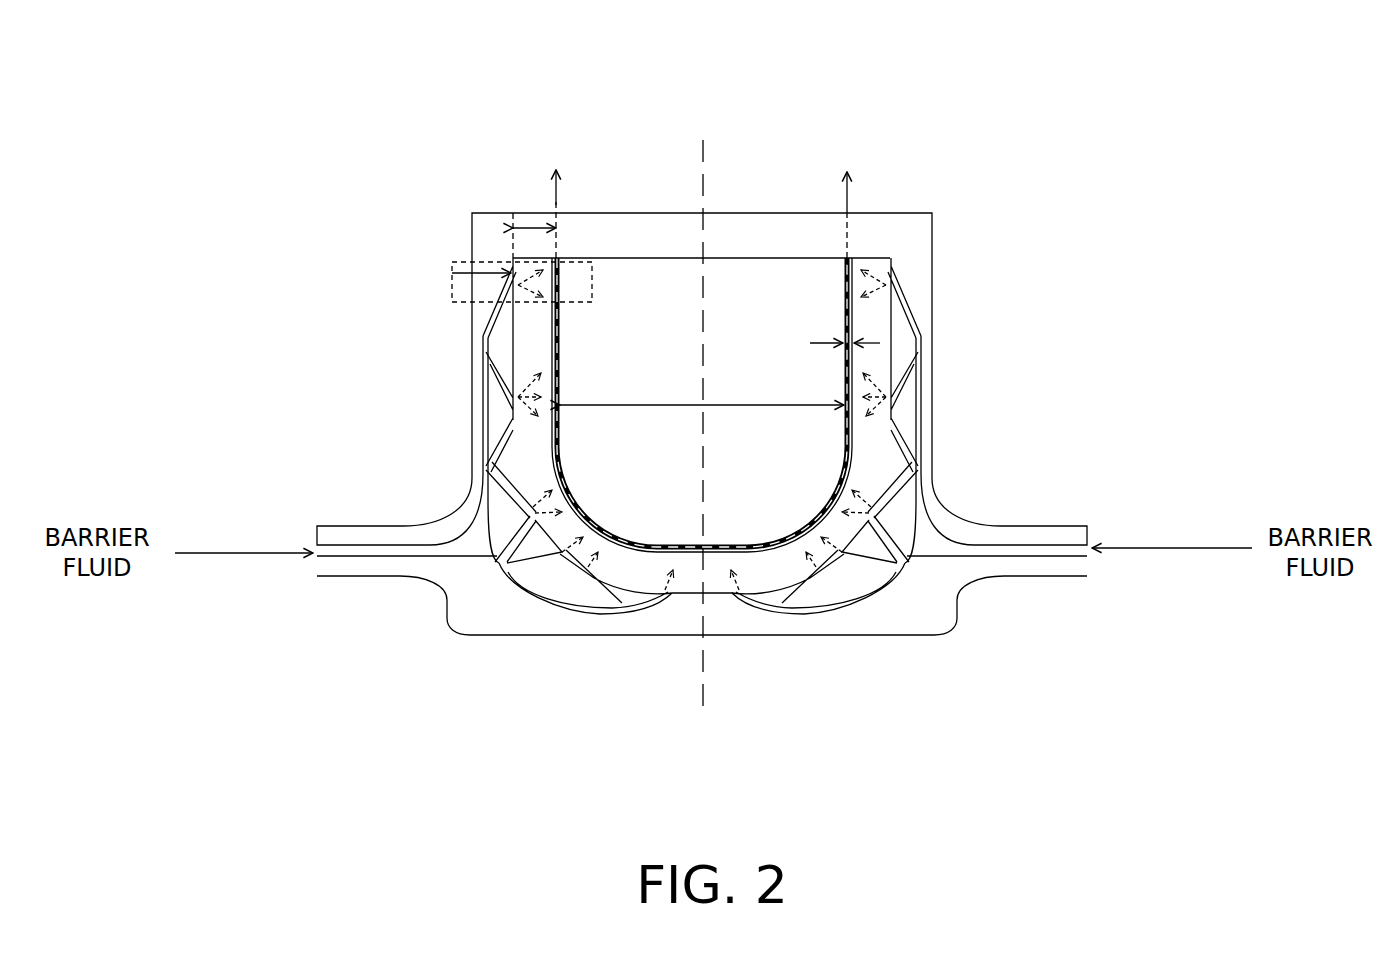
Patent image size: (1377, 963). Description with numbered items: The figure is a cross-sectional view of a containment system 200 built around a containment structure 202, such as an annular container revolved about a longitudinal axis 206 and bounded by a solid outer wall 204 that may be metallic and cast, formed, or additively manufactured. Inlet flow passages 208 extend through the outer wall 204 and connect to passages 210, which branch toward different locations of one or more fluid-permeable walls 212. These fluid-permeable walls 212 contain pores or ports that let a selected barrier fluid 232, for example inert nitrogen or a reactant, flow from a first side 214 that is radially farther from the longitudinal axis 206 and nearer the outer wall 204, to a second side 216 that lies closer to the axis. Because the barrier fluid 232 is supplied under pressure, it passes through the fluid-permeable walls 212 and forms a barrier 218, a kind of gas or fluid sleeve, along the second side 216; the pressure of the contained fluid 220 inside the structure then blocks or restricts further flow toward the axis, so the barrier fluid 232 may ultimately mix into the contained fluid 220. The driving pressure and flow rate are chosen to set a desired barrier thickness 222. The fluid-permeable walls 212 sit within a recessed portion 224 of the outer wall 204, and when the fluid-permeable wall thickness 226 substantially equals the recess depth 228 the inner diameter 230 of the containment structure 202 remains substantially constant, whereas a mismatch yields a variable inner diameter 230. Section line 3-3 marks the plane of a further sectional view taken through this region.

The containment system 200 is at (1060, 56).
The containment structure 202 is at (506, 226).
The outer wall 204 is at (932, 242).
The longitudinal axis 206 is at (703, 158).
The inlet flow passages 208 is at (297, 562).
The passages 210 is at (480, 391).
The fluid-permeable walls 212 is at (715, 587).
The first side 214 is at (916, 400).
The second side 216 is at (560, 352).
The barrier 218 is at (761, 543).
The contained fluid 220 is at (702, 388).
The barrier thickness 222 is at (810, 343).
The recessed portion 224 is at (511, 247).
The fluid-permeable wall thickness 226 is at (590, 273).
The recess depth 228 is at (530, 214).
The inner diameter 230 is at (603, 407).
The barrier fluid 232 is at (856, 180).
The section line 3-3 is at (588, 272).